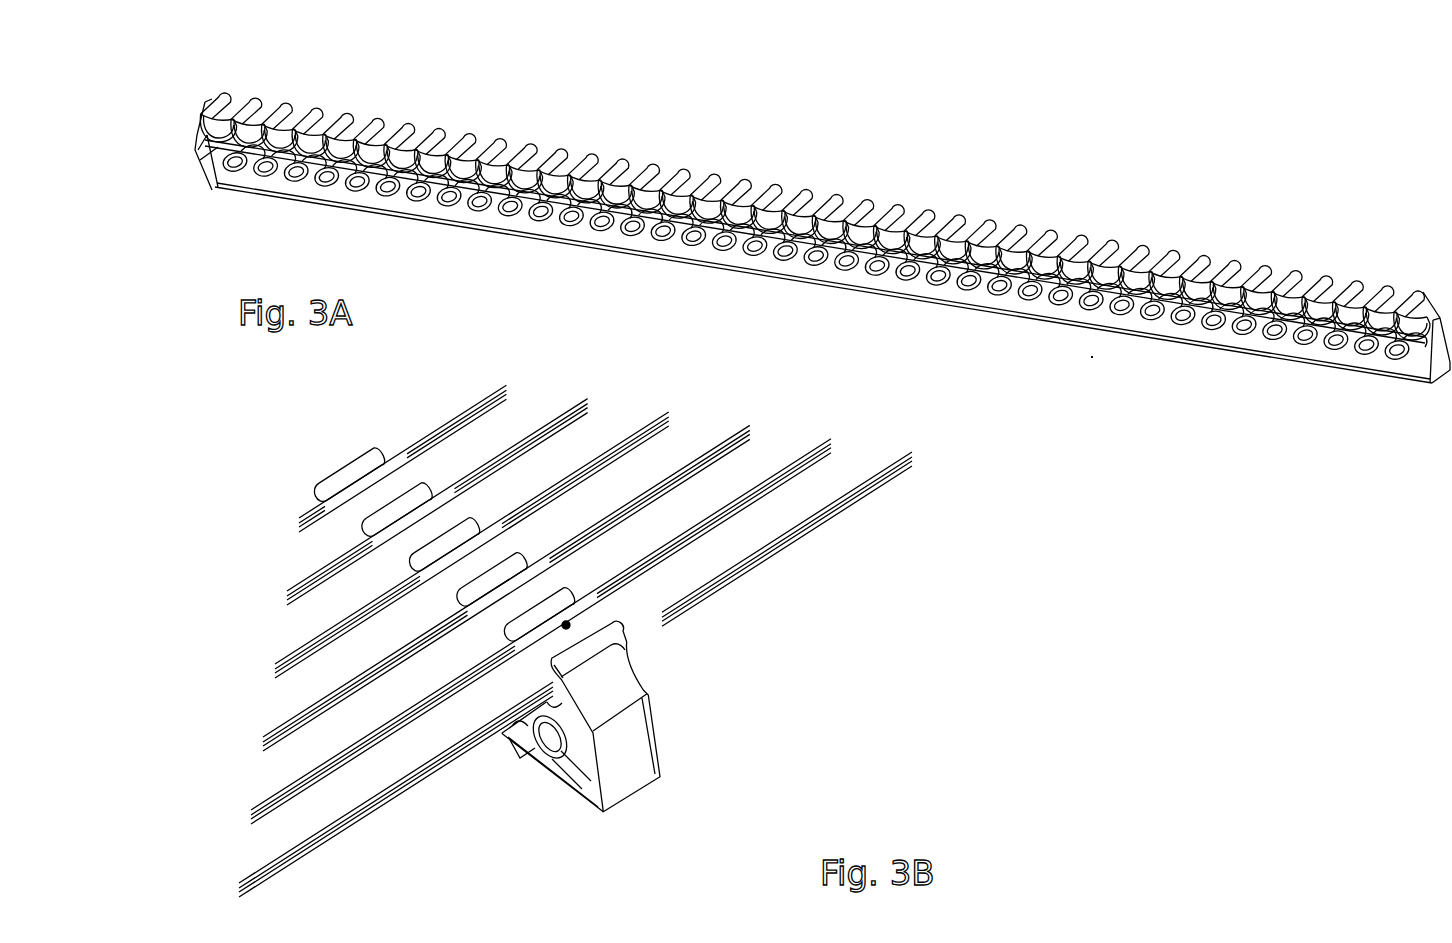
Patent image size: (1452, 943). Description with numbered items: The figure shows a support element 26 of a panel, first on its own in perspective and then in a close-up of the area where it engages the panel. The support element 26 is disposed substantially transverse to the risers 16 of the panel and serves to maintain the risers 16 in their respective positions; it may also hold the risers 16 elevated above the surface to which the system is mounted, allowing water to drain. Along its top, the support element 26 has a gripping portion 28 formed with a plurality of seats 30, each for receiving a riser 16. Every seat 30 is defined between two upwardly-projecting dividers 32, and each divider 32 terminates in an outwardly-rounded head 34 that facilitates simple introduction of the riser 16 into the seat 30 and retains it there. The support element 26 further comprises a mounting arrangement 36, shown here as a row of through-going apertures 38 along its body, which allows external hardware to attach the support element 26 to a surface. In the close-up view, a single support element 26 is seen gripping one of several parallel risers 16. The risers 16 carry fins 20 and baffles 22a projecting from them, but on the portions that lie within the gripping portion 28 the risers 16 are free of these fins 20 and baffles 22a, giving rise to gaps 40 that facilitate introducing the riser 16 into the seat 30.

In FIG. 3B, the riser 16 is at (742, 540).
In FIG. 3B, the fin 20 is at (720, 590).
In FIG. 3B, the baffle 22a is at (760, 501).
In FIG. 3A, the support element 26 is at (766, 216).
In FIG. 3B, the support element 26 is at (629, 716).
In FIG. 3A, the gripping portion 28 is at (194, 90).
In FIG. 3A, the seat 30 is at (255, 127).
In FIG. 3A, the divider 32 is at (213, 167).
In FIG. 3A, the outwardly-rounded head 34 is at (223, 102).
In FIG. 3B, the outwardly-rounded head 34 is at (590, 648).
In FIG. 3A, the mounting arrangement 36 is at (187, 146).
In FIG. 3A, the through-going aperture 38 is at (260, 172).
In FIG. 3B, the gap 40 is at (571, 623).